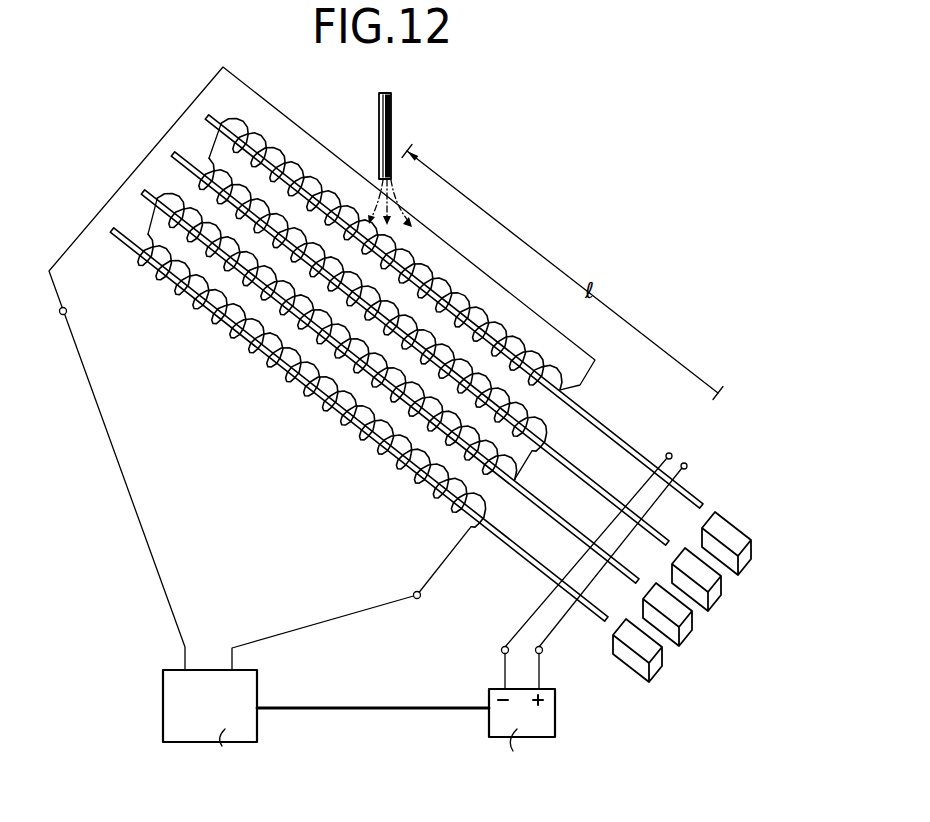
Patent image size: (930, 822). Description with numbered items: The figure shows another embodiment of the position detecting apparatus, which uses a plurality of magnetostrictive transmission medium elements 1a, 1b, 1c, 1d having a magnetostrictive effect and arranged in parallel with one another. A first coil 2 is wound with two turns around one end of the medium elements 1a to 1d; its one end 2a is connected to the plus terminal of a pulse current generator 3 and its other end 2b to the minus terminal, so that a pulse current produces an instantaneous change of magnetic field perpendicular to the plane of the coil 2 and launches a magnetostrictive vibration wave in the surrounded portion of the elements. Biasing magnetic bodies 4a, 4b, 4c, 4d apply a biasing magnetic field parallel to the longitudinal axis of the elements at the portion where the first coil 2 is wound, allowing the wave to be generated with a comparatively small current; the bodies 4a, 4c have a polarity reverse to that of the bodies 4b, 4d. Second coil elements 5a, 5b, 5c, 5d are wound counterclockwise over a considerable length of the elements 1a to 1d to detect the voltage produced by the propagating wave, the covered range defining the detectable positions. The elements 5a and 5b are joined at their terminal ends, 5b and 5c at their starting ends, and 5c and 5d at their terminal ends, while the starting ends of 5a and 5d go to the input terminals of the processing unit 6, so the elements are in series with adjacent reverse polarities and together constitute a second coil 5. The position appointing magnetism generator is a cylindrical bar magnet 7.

The magnetostrictive transmission medium element 1a is at (519, 550).
The magnetostrictive transmission medium element 1b is at (568, 526).
The magnetostrictive transmission medium element 1c is at (595, 486).
The magnetostrictive transmission medium element 1d is at (615, 439).
The first coil 2 is at (673, 462).
The one end of the first coil 2a is at (542, 653).
The other end of the first coil 2b is at (502, 653).
The pulse current generator 3 is at (489, 723).
The biasing magnetic body 4a is at (660, 665).
The biasing magnetic body 4b is at (698, 632).
The biasing magnetic body 4c is at (717, 600).
The biasing magnetic body 4d is at (743, 566).
The second coil 5 is at (355, 323).
The second coil element 5a is at (348, 432).
The second coil element 5b is at (504, 488).
The second coil element 5c is at (553, 411).
The second coil element 5d is at (513, 330).
The processing unit 6 is at (258, 704).
The bar magnet 7 is at (393, 135).